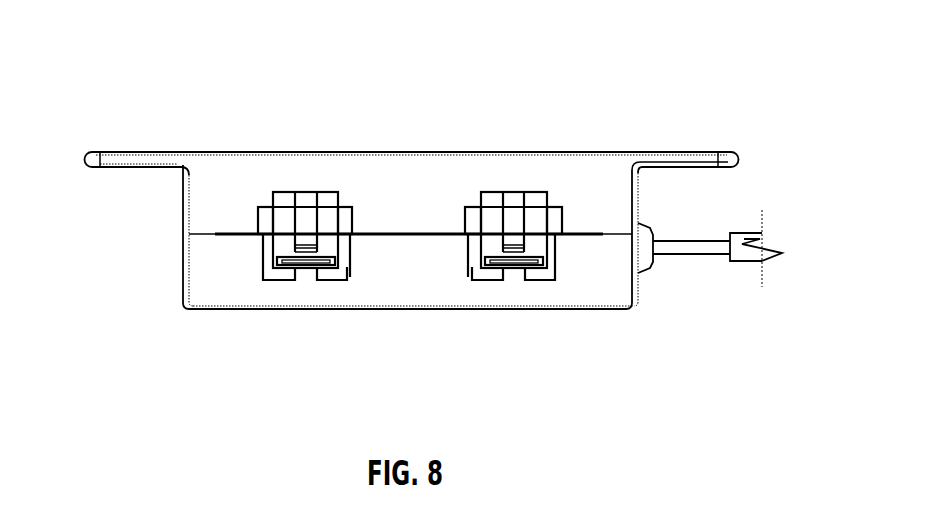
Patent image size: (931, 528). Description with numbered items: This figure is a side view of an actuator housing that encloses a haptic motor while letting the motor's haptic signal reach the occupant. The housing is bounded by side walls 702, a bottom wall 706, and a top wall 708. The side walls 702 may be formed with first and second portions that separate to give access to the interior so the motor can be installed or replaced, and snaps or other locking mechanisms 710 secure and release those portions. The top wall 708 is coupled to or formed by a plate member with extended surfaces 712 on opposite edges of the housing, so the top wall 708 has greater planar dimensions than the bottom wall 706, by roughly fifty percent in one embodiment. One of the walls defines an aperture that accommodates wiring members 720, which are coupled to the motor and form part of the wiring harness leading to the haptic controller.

The side walls 702 is at (197, 252).
The bottom wall 706 is at (403, 312).
The top wall 708 is at (673, 140).
The locking mechanisms 710 is at (268, 205).
The extended surfaces 712 is at (110, 150).
The wiring members 720 is at (688, 257).